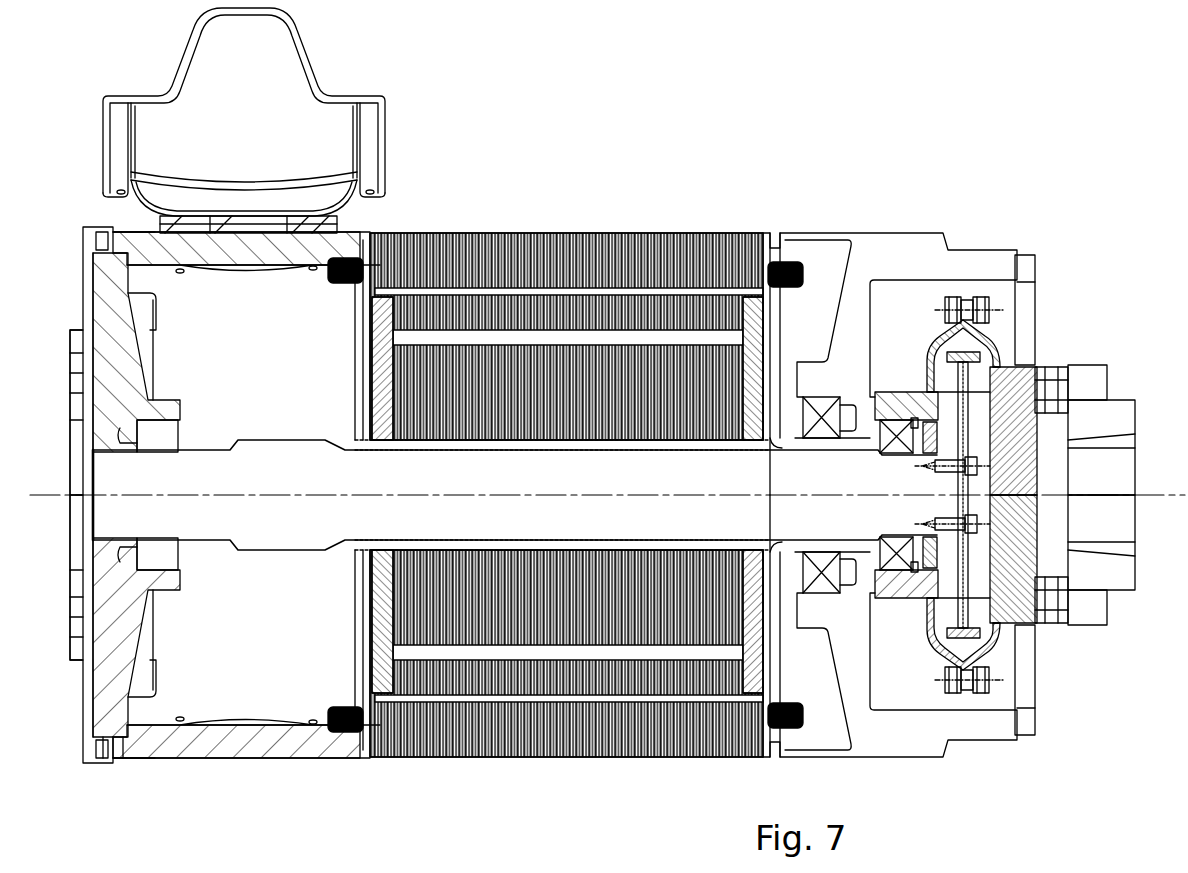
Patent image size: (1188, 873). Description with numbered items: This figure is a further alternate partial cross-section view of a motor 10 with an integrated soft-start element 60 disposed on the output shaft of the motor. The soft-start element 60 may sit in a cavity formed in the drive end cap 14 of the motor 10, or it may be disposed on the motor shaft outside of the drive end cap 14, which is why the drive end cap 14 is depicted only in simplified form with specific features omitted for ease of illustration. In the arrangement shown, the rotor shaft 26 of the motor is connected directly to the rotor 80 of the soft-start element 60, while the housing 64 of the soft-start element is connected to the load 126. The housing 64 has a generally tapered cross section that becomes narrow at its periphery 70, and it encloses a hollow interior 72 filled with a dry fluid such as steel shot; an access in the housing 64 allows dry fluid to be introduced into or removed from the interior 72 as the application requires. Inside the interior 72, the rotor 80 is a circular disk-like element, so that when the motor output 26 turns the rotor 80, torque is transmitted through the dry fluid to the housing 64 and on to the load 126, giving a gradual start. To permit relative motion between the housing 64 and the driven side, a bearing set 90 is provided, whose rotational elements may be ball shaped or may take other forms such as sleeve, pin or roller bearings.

The motor 10 is at (567, 224).
The drive end cap 14 is at (855, 277).
The motor output 26 is at (850, 485).
The soft-start element 60 is at (1063, 276).
The housing 64 is at (987, 337).
The periphery 70 is at (962, 296).
The hollow interior 72 is at (946, 602).
The rotor 80 is at (967, 595).
The bearing set 90 is at (903, 558).
The load 126 is at (1132, 485).